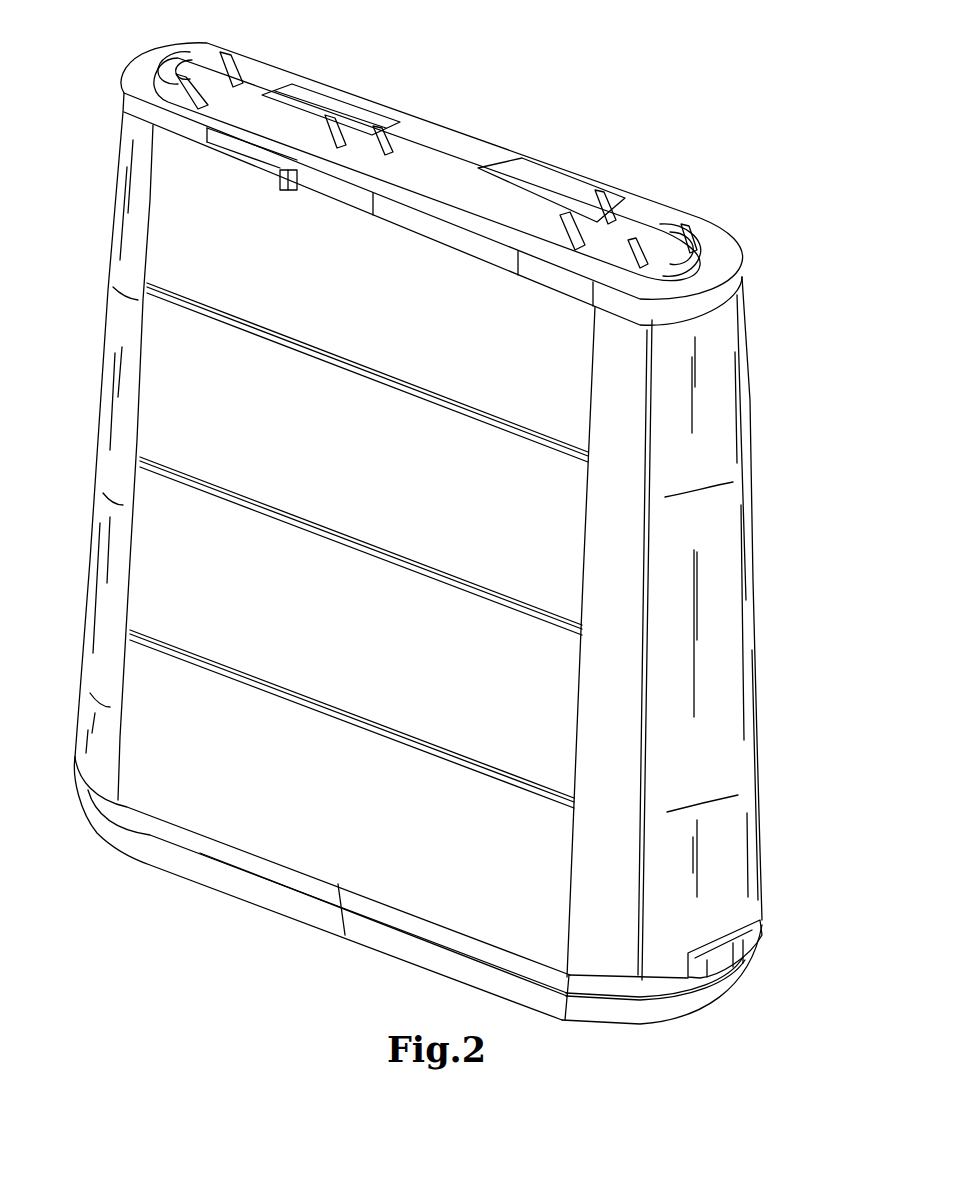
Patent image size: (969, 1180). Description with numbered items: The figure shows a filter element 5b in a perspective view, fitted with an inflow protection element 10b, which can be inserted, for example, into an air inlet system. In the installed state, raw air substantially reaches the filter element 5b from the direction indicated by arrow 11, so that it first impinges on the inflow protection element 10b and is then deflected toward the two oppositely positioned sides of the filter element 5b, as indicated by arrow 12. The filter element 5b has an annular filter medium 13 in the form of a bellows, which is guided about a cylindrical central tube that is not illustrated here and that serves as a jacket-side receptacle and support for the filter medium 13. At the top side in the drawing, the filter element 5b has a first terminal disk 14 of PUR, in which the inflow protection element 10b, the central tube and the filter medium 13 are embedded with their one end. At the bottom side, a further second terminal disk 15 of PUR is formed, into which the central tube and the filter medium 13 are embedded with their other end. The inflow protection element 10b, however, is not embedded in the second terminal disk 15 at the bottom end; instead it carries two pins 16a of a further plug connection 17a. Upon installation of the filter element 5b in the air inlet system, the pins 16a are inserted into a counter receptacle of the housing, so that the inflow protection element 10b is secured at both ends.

The filter element 5b is at (469, 184).
The first terminal disk 14 is at (455, 165).
The filter medium 13 is at (168, 345).
The arrow 12 is at (556, 599).
The inflow protection element 10b is at (722, 422).
The arrow 11 is at (812, 688).
The second terminal disk 15 is at (297, 898).
The pins 16a is at (751, 965).
The further plug connection 17a is at (733, 1003).